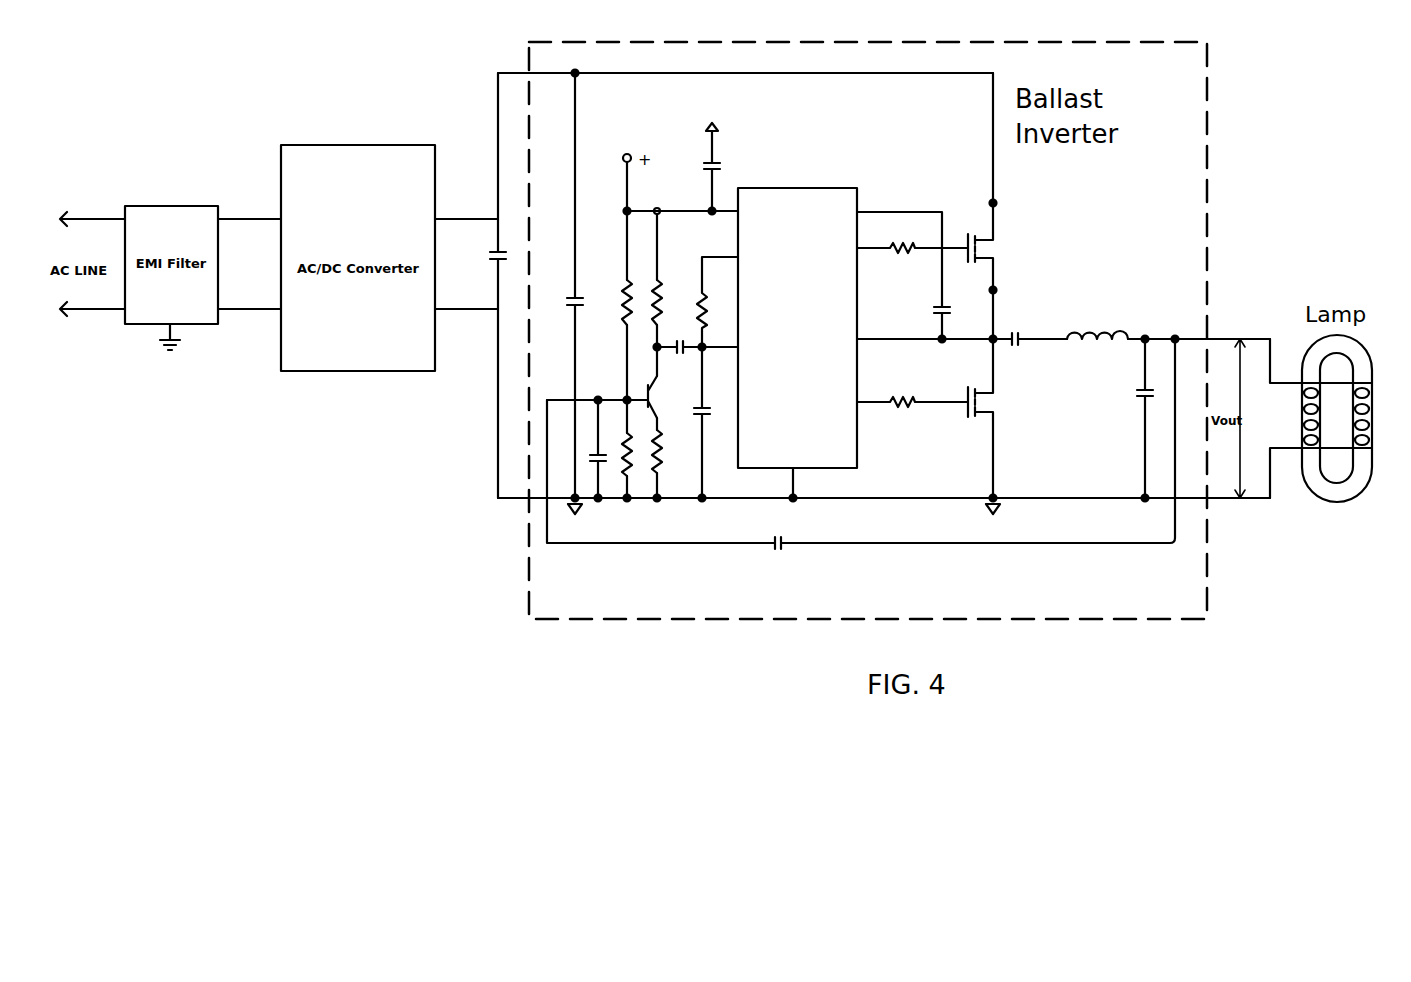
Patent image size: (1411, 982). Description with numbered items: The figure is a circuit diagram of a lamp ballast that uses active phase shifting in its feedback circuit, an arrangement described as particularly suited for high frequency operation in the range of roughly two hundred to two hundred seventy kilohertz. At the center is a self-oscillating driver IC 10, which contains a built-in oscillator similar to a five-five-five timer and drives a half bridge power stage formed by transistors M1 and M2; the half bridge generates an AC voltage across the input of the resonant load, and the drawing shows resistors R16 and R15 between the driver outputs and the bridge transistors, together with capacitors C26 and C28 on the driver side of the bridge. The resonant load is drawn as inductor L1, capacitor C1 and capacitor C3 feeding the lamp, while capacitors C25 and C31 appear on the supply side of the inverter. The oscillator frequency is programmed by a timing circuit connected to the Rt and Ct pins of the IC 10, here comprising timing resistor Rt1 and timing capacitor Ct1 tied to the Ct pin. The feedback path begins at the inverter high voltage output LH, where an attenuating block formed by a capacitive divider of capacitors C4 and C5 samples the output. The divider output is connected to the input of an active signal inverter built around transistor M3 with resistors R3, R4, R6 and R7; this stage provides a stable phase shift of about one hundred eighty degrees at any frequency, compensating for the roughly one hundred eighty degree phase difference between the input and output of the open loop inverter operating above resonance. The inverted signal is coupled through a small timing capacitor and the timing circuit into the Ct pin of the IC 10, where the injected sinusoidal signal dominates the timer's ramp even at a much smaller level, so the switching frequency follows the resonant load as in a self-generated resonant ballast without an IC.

The self-oscillating driver IC 10 is at (810, 190).
The DC bus capacitor C25 is at (474, 285).
The capacitor C31 is at (555, 292).
The resistor R3 is at (610, 302).
The resistor R4 is at (632, 478).
The resistor R6 is at (645, 284).
The resistor R7 is at (670, 451).
The transistor M3 is at (668, 397).
The Ct pin Ct is at (697, 334).
The timing resistor Rt1 is at (705, 287).
The timing capacitor Ct1 is at (706, 430).
The capacitor C5 is at (591, 420).
The capacitor C4 is at (748, 545).
The capacitor C26 is at (739, 167).
The capacitor C28 is at (903, 275).
The resistor R16 is at (912, 268).
The resistor R15 is at (912, 386).
The transistor M1 is at (999, 257).
The transistor M2 is at (999, 394).
The DC blocking capacitor C1 is at (1021, 324).
The resonant inductor L1 is at (1097, 320).
The resonant capacitor C3 is at (1126, 418).
The inverter high voltage output LH is at (1169, 324).